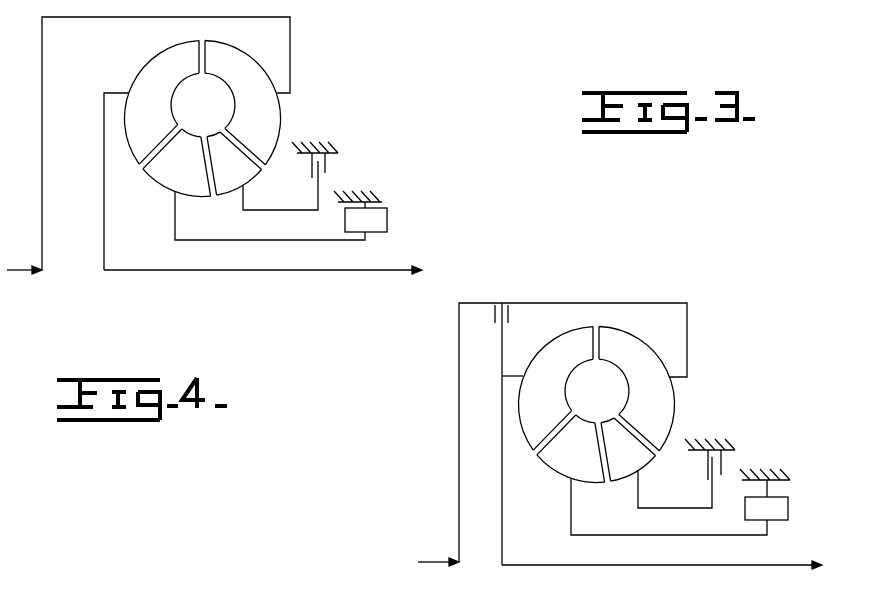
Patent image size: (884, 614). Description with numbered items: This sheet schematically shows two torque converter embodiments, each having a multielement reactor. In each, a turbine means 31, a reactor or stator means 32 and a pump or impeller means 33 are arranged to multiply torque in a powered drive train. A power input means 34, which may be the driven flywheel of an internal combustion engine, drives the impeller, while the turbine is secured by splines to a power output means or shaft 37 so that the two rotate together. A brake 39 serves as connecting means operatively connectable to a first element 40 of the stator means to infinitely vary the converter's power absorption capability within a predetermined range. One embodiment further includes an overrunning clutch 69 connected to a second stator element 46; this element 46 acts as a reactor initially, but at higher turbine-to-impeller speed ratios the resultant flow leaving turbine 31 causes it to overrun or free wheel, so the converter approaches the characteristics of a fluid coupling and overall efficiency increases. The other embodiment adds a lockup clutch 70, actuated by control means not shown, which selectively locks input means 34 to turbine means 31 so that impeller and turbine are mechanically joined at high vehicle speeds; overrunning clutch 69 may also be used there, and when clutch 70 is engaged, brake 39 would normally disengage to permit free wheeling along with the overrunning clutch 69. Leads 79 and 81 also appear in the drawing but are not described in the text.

In FIG. 4, the turbine means 31 is at (150, 48).
In FIG. 3, the turbine means 31 is at (561, 323).
In FIG. 4, the reactor or stator means 32 is at (152, 196).
In FIG. 3, the reactor or stator means 32 is at (546, 478).
In FIG. 4, the pump or impeller means 33 is at (296, 113).
In FIG. 3, the pump or impeller means 33 is at (686, 405).
In FIG. 4, the power input means 34 is at (20, 272).
In FIG. 3, the power input means 34 is at (428, 560).
In FIG. 4, the power output means or shaft 37 is at (285, 272).
In FIG. 3, the power output means or shaft 37 is at (588, 567).
In FIG. 3, the brake 39 is at (733, 458).
In FIG. 4, the first element of the stator means 40 is at (253, 176).
In FIG. 3, the first element of the stator means 40 is at (640, 462).
In FIG. 4, the stator element 46 is at (190, 193).
In FIG. 3, the stator element 46 is at (584, 473).
In FIG. 4, the overrunning clutch 69 is at (397, 223).
In FIG. 3, the overrunning clutch 69 is at (796, 518).
In FIG. 3, the lockup clutch 70 is at (505, 293).
In FIG. 3, the lead 79 is at (386, 599).
In FIG. 3, the lead 81 is at (452, 602).